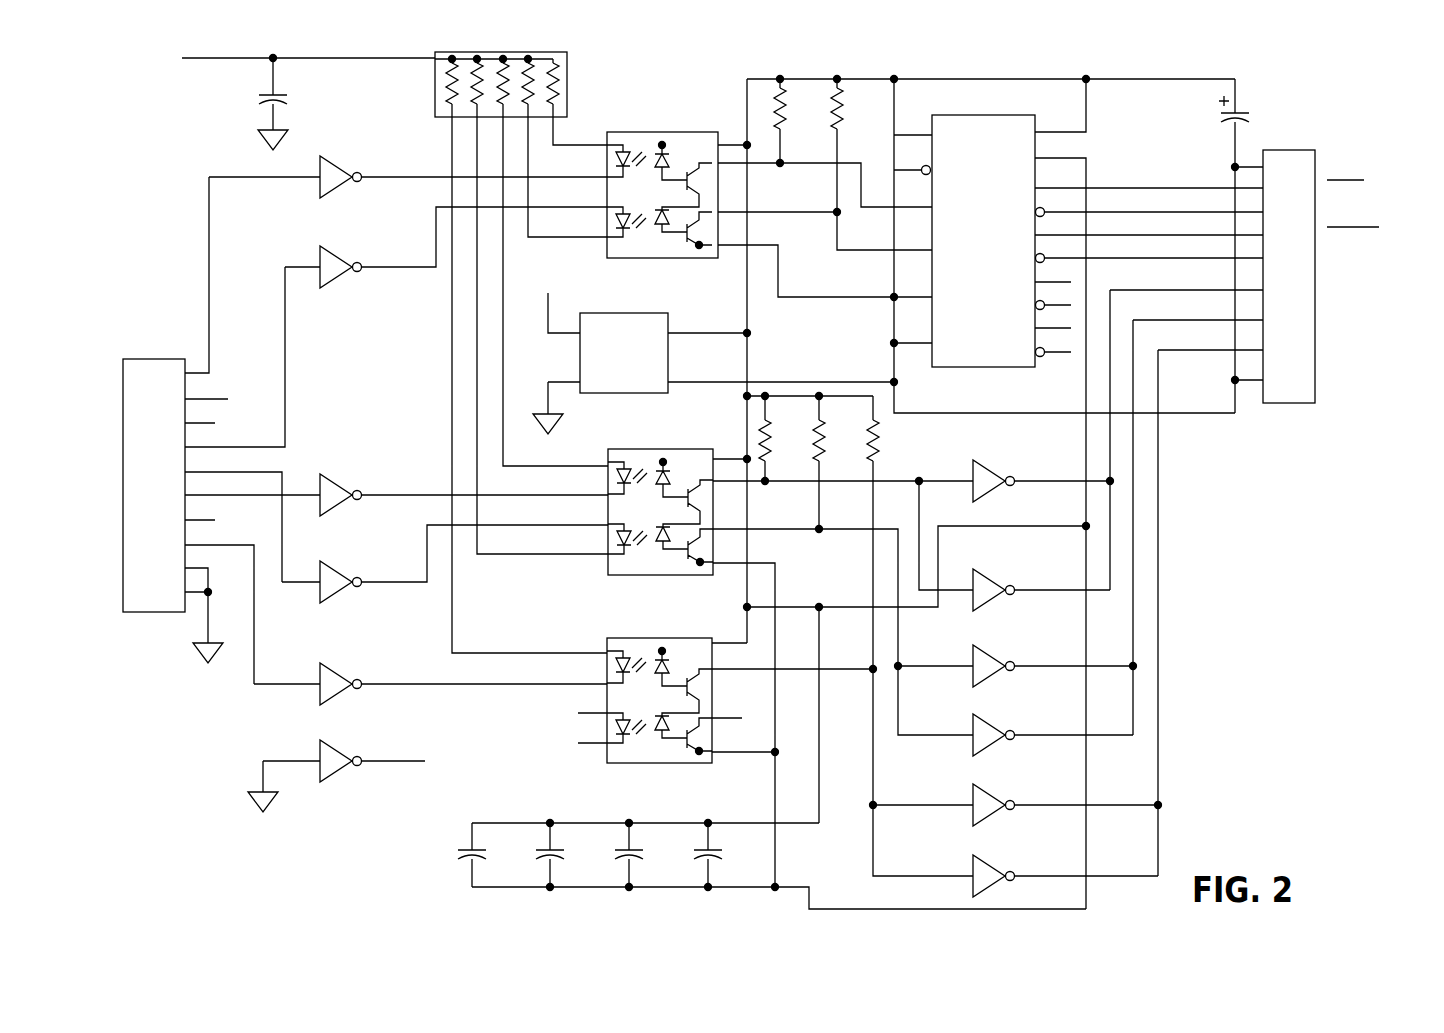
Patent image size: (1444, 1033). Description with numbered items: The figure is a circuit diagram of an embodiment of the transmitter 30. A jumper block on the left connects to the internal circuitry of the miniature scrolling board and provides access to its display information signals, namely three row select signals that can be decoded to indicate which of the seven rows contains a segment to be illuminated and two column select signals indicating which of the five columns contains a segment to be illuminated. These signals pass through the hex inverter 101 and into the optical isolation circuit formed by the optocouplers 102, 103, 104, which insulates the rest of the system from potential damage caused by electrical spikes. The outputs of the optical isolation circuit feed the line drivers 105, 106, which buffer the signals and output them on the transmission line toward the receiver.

The transmitter 30 is at (774, 472).
The hex inverter U101 (74ALS04) 101 is at (363, 454).
The optical isolation circuit 102 is at (663, 175).
The optical isolation circuit 103 is at (662, 492).
The optical isolation circuit 104 is at (662, 679).
The line driver 105 is at (985, 260).
The line driver 106 is at (1015, 663).